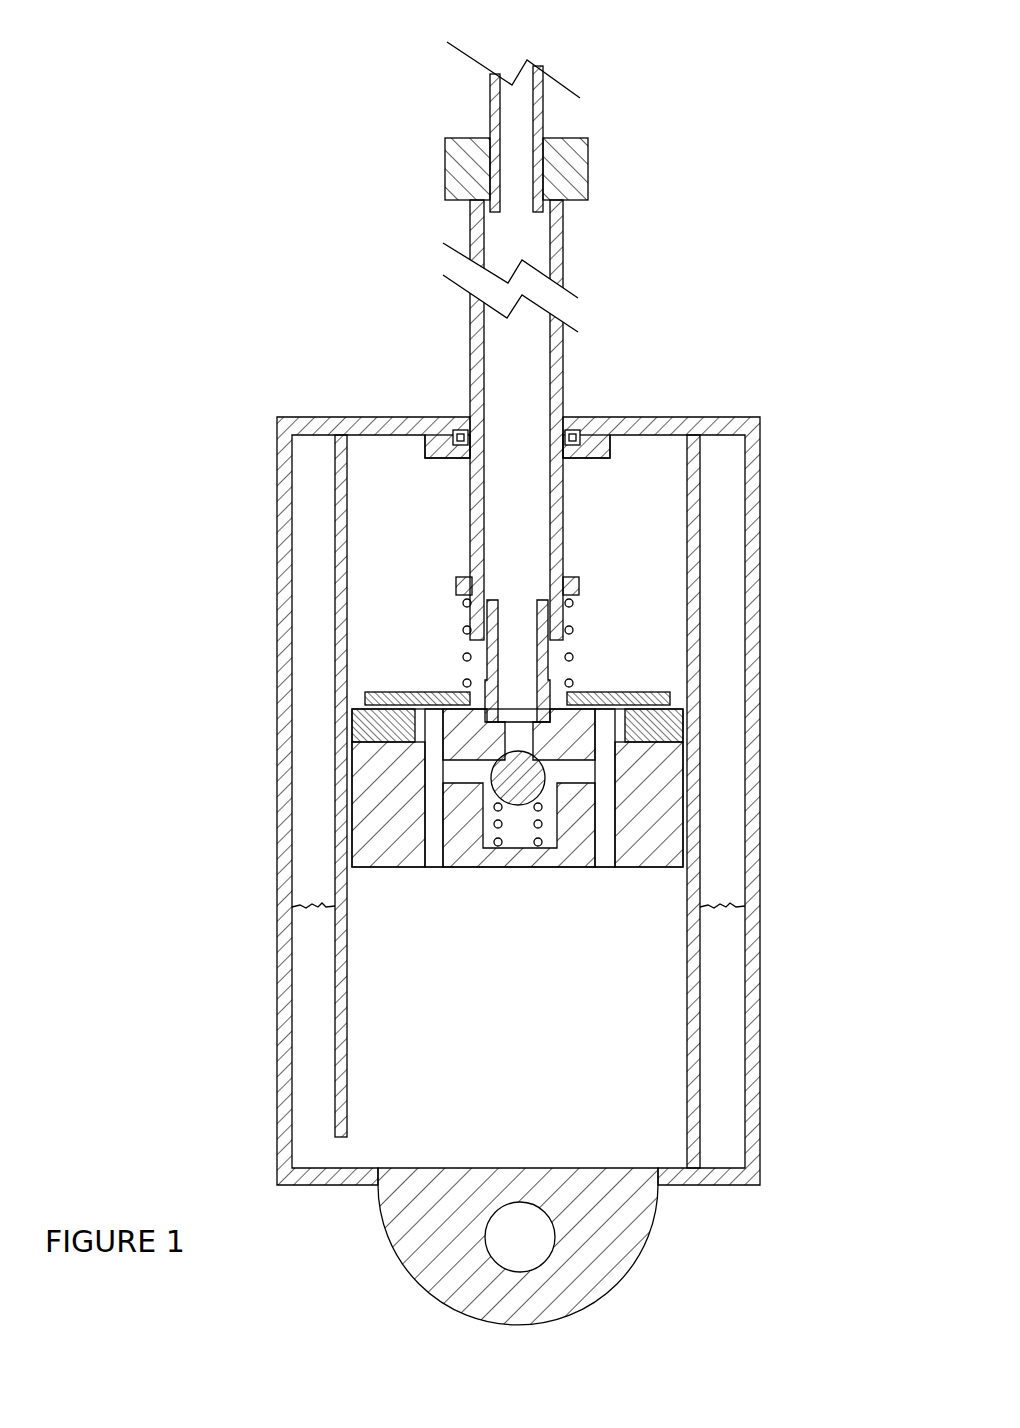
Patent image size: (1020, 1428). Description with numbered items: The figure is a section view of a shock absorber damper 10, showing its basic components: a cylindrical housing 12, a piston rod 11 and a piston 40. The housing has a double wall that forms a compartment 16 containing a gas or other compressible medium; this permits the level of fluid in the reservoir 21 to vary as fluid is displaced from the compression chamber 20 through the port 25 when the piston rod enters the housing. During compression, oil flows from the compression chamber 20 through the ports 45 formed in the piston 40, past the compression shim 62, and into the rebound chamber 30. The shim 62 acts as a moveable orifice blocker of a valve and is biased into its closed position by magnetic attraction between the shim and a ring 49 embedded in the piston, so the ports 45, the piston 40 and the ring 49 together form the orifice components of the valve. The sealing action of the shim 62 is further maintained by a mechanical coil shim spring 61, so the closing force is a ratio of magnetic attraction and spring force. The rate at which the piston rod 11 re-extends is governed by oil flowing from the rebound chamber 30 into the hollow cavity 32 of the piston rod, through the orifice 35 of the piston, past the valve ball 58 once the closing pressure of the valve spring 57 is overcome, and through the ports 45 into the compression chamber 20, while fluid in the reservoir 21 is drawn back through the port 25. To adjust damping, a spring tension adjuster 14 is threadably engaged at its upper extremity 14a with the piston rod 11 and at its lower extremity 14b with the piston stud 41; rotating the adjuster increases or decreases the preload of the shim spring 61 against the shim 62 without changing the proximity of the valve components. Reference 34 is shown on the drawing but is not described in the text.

The shock absorber damper 10 is at (220, 342).
The piston rod 11 is at (493, 100).
The cylindrical housing 12 is at (285, 488).
The spring tension adjuster 14 is at (477, 312).
The upper extremity 14a is at (585, 178).
The lower extremity 14b is at (570, 614).
The compartment 16 is at (310, 683).
The compression chamber 20 is at (521, 1015).
The reservoir 21 is at (300, 907).
The port 25 is at (336, 1152).
The rebound chamber 30 is at (398, 499).
The hollow cavity 32 is at (530, 556).
The rod wall 34 is at (480, 543).
The orifice 35 is at (515, 722).
The piston 40 is at (478, 826).
The piston stud 41 is at (490, 665).
The ports 45 is at (434, 867).
The ring 49 is at (685, 712).
The valve spring 57 is at (541, 832).
The valve ball 58 is at (497, 832).
The shim spring 61 is at (573, 600).
The compression shim 62 is at (598, 692).